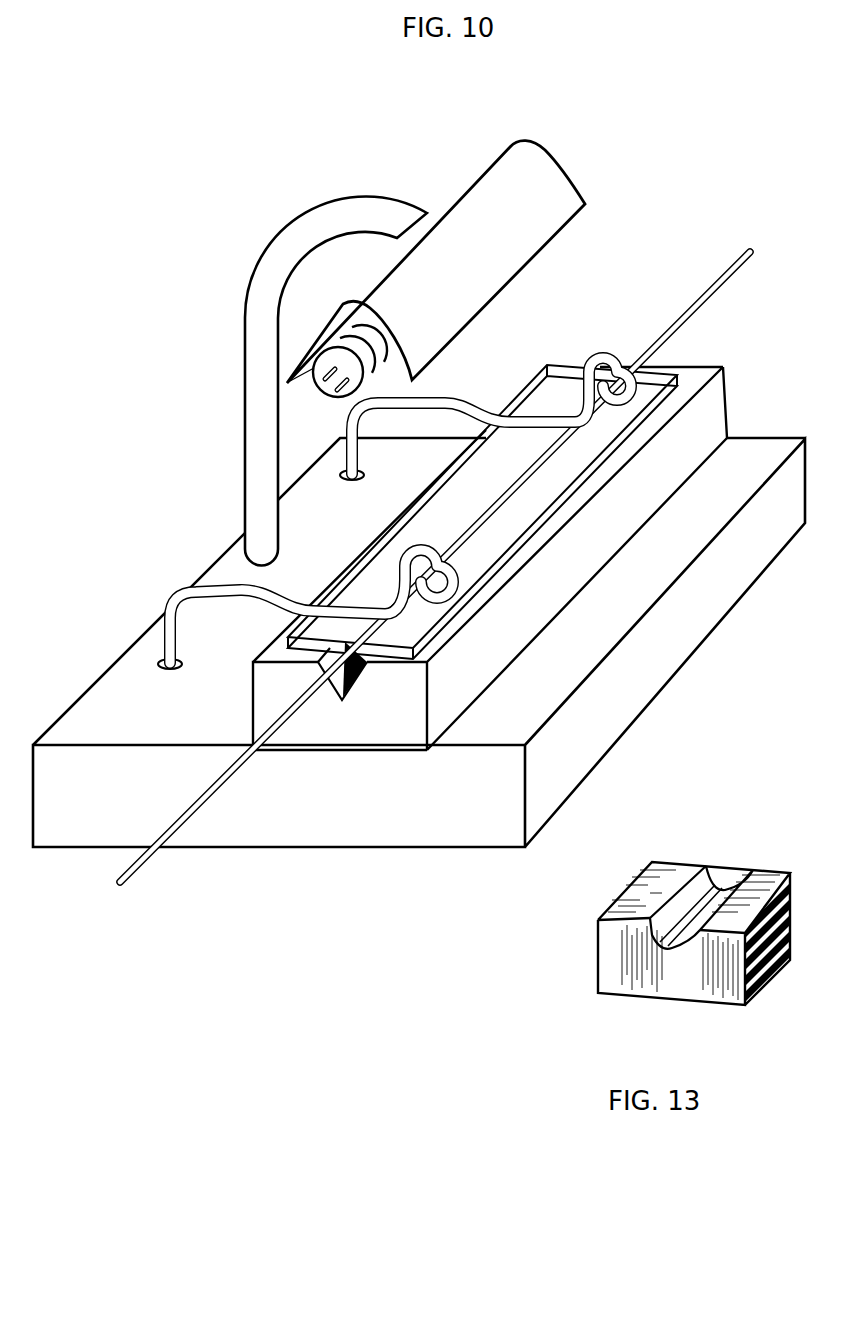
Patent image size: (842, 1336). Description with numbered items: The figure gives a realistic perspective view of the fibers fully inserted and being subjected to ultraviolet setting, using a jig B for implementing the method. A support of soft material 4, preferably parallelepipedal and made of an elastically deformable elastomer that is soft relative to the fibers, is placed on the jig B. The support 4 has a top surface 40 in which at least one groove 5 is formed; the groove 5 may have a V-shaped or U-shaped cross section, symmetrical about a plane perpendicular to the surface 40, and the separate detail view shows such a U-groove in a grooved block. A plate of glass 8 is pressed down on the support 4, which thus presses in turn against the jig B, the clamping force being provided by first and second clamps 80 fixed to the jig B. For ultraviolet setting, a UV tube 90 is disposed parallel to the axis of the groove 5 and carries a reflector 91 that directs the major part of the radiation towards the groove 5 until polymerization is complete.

In FIG. 10, the jig B is at (435, 828).
In FIG. 10, the support of soft material 4 is at (712, 413).
In FIG. 13, the support of soft material 4 is at (617, 983).
In FIG. 10, the top surface 40 is at (697, 368).
In FIG. 13, the top surface 40 is at (642, 878).
In FIG. 10, the groove 5 is at (543, 460).
In FIG. 13, the groove 5 is at (720, 876).
In FIG. 10, the plate of glass 8 is at (518, 513).
In FIG. 10, the clamps 80 is at (452, 411).
In FIG. 10, the UV tube 90 is at (407, 353).
In FIG. 10, the reflector 91 is at (556, 197).